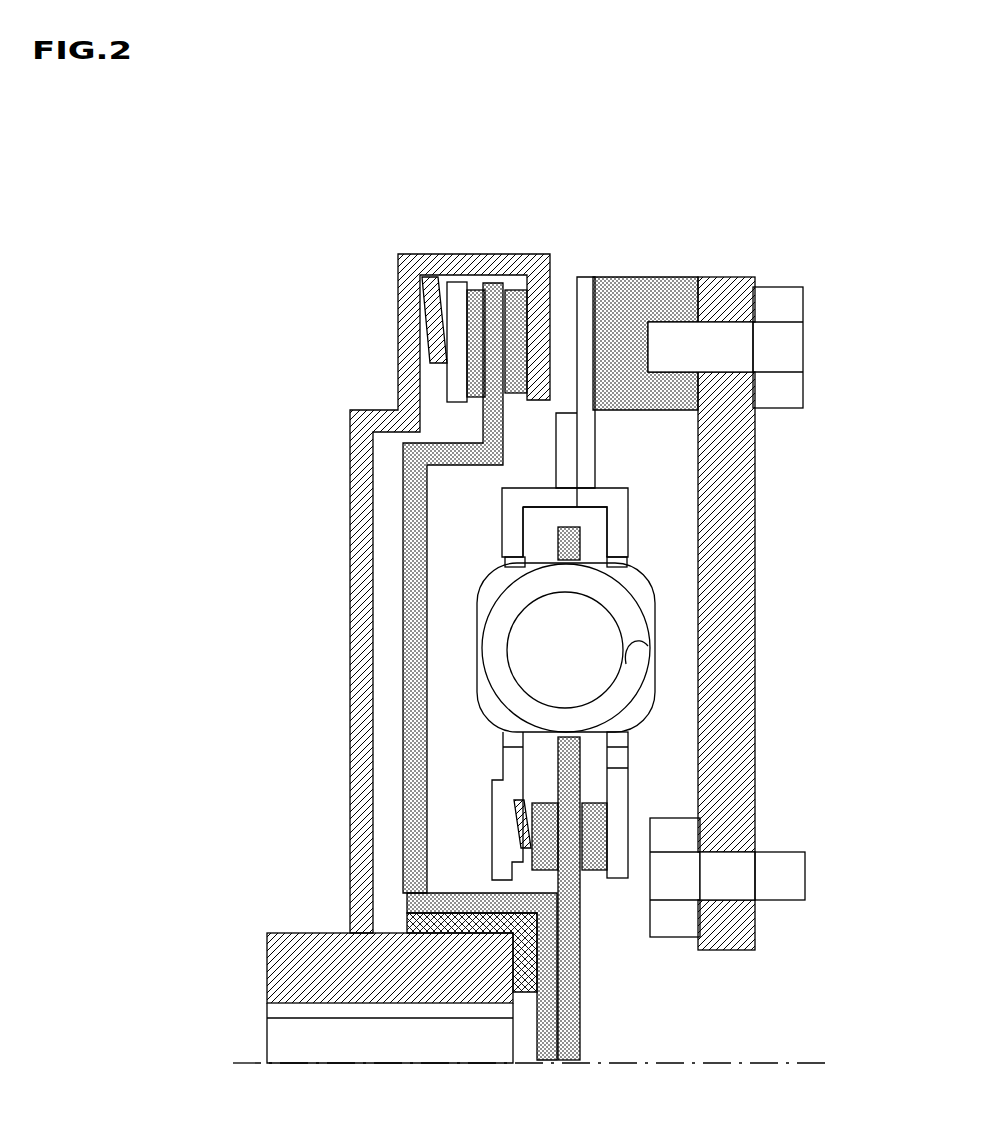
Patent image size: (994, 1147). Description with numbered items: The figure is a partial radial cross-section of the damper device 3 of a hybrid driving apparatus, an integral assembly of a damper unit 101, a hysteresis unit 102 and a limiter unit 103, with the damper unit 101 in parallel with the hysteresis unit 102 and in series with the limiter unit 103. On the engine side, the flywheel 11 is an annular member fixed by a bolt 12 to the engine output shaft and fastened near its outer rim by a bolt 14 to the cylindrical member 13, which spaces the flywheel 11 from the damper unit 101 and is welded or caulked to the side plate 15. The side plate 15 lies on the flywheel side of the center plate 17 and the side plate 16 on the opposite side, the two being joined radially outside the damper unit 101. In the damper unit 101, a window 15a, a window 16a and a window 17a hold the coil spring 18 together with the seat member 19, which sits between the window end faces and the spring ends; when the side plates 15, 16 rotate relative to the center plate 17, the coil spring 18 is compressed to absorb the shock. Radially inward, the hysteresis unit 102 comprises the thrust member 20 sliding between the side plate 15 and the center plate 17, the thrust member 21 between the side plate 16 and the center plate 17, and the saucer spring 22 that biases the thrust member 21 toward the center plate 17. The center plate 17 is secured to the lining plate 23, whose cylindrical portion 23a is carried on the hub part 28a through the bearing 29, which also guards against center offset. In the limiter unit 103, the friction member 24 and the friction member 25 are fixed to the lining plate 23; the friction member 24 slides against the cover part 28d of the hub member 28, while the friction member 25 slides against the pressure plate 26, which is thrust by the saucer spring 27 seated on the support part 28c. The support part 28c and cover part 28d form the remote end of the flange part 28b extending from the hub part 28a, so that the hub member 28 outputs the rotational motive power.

The damper device 3 is at (850, 227).
The flywheel 11 is at (745, 452).
The bolt 12 is at (790, 878).
The cylindrical member 13 is at (650, 300).
The bolt 14 is at (790, 345).
The side plate 15 is at (620, 508).
The window 15a is at (630, 562).
The side plate 16 is at (510, 508).
The window 16a is at (503, 562).
The center plate 17 is at (585, 778).
The window 17a is at (585, 742).
The coil spring 18 is at (640, 655).
The seat member 19 is at (640, 587).
The thrust member 20 is at (592, 863).
The thrust member 21 is at (537, 860).
The saucer spring 22 is at (513, 826).
The lining plate 23 is at (412, 705).
The cylindrical portion 23a is at (468, 898).
The friction member 24 is at (512, 290).
The friction member 25 is at (476, 296).
The pressure plate 26 is at (457, 383).
The saucer spring 27 is at (398, 322).
The hub member 28 is at (391, 626).
The hub part 28a is at (272, 968).
The flange part 28b is at (355, 650).
The support part 28c is at (398, 288).
The cover part 28d is at (548, 317).
The bearing 29 is at (525, 995).
The damper unit 101 is at (680, 638).
The hysteresis unit 102 is at (645, 818).
The limiter unit 103 is at (371, 349).